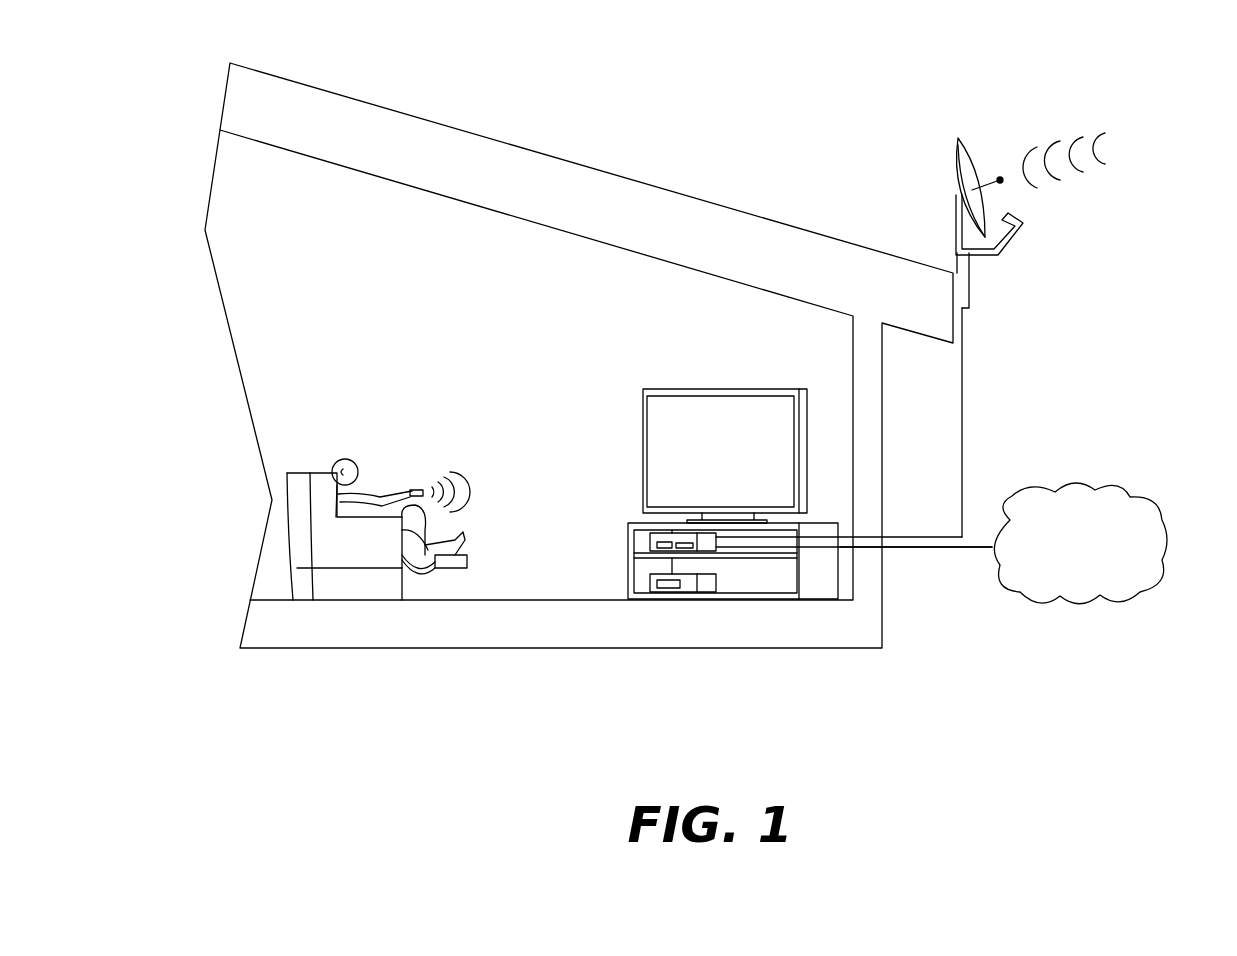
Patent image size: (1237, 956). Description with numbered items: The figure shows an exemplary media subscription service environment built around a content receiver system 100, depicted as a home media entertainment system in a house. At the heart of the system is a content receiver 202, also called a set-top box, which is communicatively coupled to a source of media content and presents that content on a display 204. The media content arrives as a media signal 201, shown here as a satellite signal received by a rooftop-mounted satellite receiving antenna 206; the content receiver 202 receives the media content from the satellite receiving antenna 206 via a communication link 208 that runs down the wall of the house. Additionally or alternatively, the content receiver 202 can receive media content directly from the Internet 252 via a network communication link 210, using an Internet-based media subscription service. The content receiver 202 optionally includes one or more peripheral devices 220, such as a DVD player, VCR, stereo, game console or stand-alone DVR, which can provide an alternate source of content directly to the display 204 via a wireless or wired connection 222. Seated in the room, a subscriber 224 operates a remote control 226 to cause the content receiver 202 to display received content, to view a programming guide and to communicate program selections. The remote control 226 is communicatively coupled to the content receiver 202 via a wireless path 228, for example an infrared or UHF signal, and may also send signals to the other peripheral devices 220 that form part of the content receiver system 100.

The content receiver system 100 is at (808, 110).
The media signal 201 is at (1130, 148).
The content receiver 202 is at (650, 538).
The display 204 is at (722, 388).
The satellite receiving antenna 206 is at (968, 167).
The communication link 208 is at (963, 398).
The network communication link 210 is at (937, 549).
The peripheral device 220 is at (650, 574).
The wireless or wired connection 222 is at (813, 520).
The subscriber 224 is at (343, 458).
The remote control 226 is at (413, 489).
The wireless path 228 is at (474, 482).
The Internet 252 is at (1110, 492).